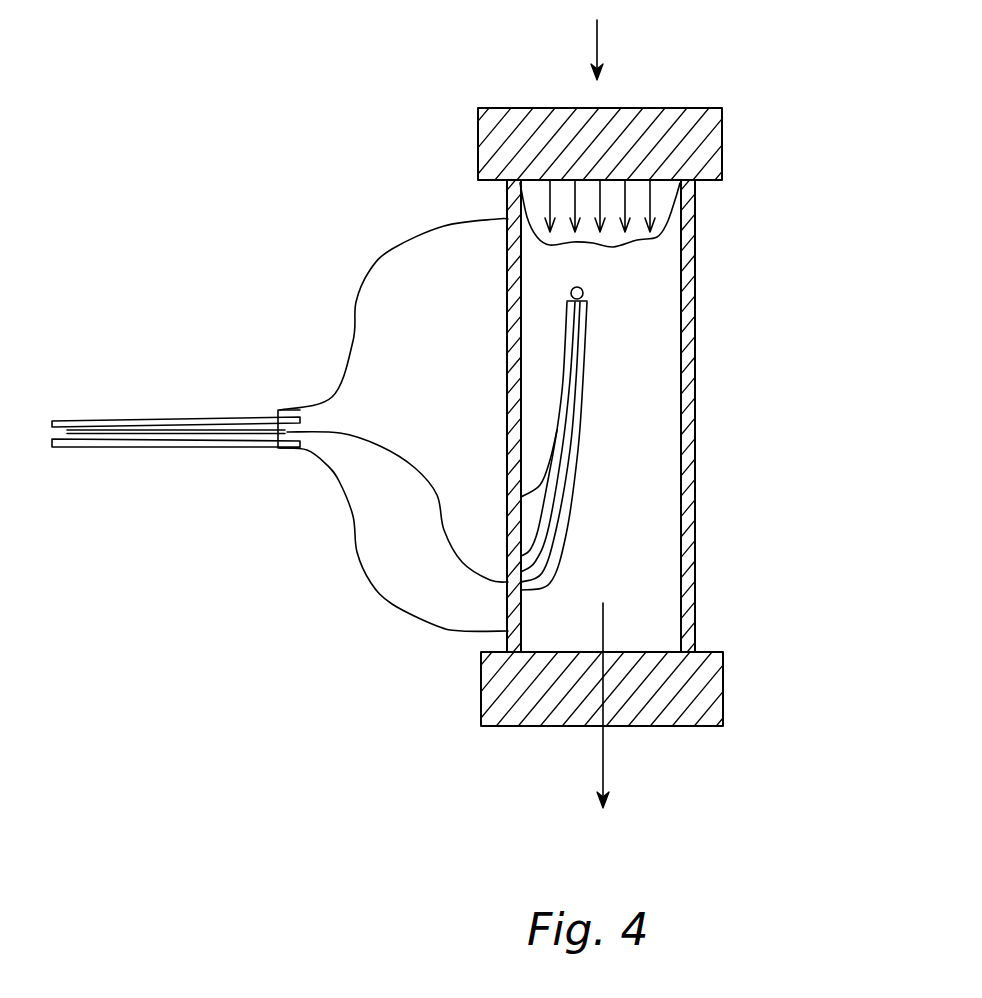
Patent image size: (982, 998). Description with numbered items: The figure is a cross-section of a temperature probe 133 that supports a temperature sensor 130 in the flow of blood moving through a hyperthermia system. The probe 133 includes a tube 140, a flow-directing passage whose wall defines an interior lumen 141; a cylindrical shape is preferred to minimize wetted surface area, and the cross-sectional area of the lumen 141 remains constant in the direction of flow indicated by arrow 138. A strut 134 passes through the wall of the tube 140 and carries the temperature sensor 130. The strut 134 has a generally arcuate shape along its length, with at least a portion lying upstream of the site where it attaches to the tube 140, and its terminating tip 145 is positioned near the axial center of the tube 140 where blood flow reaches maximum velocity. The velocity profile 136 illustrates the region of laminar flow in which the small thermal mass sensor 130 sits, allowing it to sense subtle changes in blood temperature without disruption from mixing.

The temperature probe 133 is at (777, 258).
The arrow 138 is at (597, 45).
The velocity profile 136 is at (673, 200).
The tube 140 is at (695, 598).
The interior lumen 141 is at (680, 473).
The strut 134 is at (585, 442).
The terminating tip 145 is at (580, 285).
The temperature sensor 130 is at (584, 293).